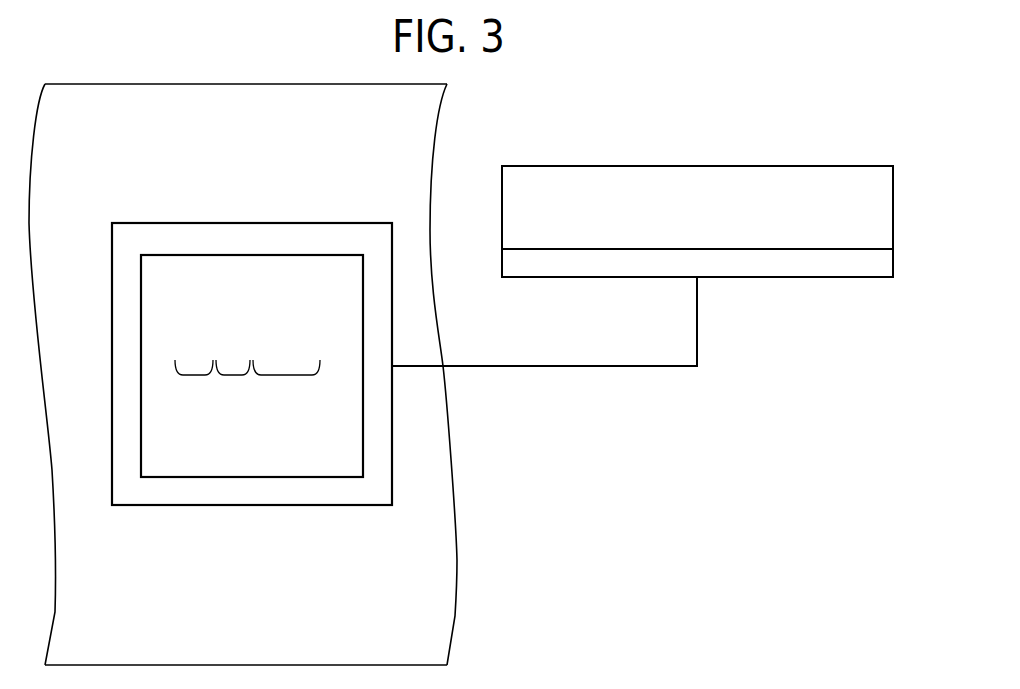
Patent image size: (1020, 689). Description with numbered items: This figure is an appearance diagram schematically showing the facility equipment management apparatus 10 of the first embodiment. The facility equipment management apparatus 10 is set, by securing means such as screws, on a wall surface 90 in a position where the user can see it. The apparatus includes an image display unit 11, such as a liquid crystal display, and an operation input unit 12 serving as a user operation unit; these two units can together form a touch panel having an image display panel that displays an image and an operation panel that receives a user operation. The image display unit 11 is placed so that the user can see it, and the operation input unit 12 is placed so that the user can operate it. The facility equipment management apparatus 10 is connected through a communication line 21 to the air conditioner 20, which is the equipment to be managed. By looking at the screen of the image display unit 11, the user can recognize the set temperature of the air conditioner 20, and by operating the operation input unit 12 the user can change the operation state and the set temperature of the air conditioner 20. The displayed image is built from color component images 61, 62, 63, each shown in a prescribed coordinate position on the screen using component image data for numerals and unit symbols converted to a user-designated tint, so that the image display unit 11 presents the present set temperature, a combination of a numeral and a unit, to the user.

The facility equipment management apparatus 10 is at (252, 355).
The image display unit 11 is at (250, 260).
The operation input unit 12 is at (162, 222).
The air conditioner 20 is at (820, 279).
The communication line 21 is at (587, 367).
The color component image 61 is at (193, 377).
The color component image 62 is at (232, 377).
The color component image 63 is at (283, 377).
The wall surface 90 is at (455, 618).